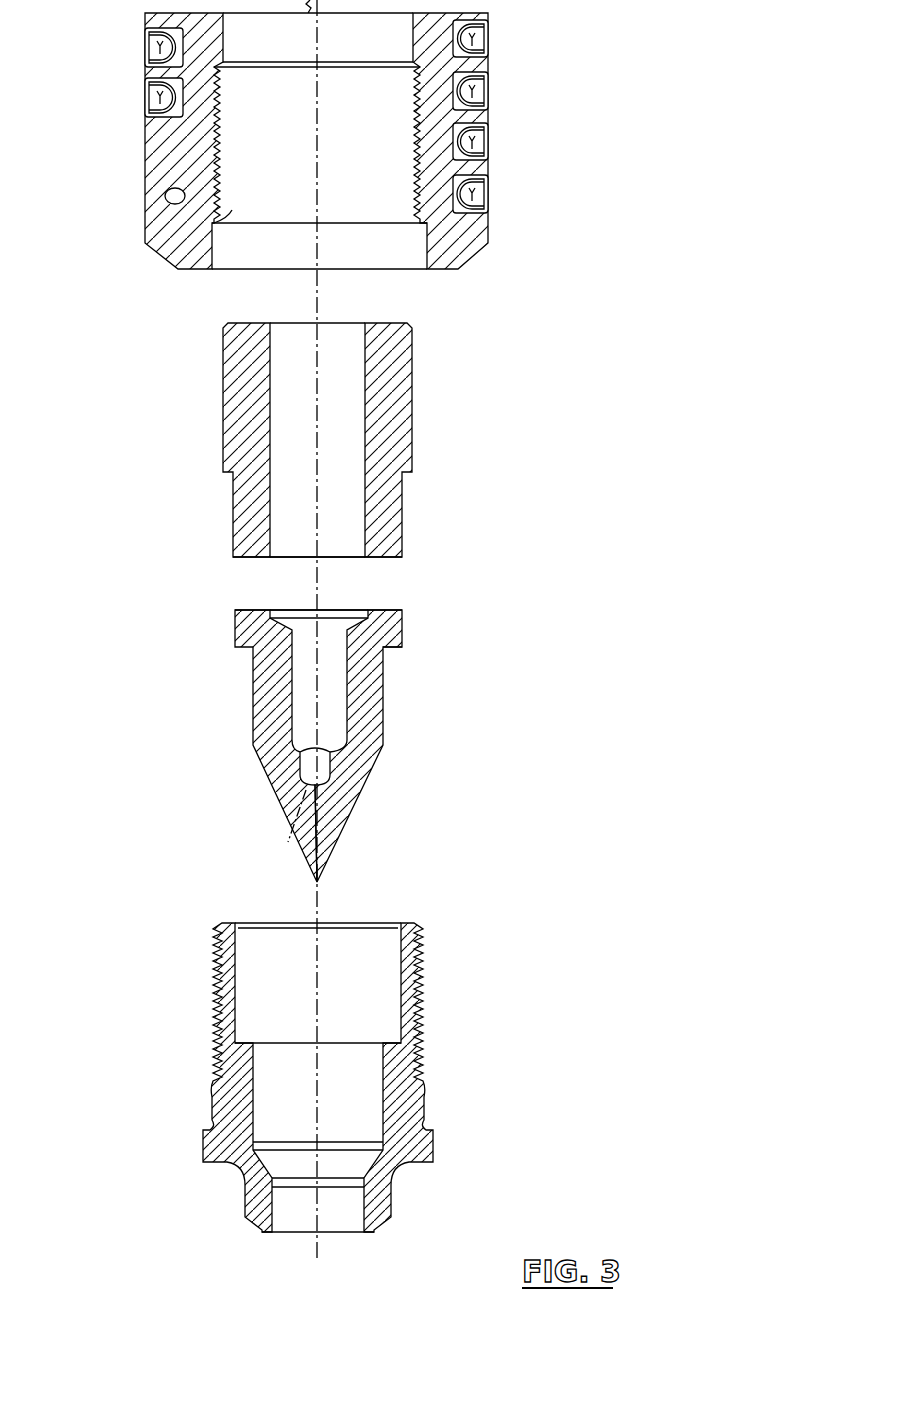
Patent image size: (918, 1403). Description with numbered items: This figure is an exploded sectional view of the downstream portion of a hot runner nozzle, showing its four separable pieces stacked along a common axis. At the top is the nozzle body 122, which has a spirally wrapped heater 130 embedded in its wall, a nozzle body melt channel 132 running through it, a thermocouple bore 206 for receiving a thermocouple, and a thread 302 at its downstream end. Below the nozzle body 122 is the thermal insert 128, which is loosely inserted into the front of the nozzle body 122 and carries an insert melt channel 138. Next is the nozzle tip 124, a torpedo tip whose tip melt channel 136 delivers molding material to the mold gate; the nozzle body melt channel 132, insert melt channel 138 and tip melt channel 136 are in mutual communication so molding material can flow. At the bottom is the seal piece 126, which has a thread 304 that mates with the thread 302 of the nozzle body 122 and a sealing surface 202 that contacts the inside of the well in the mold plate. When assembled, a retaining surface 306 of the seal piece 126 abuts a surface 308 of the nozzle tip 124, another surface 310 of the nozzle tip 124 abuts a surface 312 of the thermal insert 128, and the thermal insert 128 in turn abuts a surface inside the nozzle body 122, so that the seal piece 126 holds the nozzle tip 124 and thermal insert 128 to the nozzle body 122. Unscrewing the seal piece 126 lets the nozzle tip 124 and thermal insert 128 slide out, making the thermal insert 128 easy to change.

The nozzle body 122 is at (458, 247).
The nozzle tip 124 is at (390, 688).
The seal piece 126 is at (423, 1142).
The thermal insert 128 is at (398, 413).
The heater 130 is at (473, 193).
The nozzle body melt channel 132 is at (341, 154).
The tip melt channel 136 is at (342, 701).
The insert melt channel 138 is at (342, 417).
The sealing surface 202 is at (400, 1197).
The thermocouple bore 206 is at (163, 203).
The thread 302 is at (226, 222).
The thread 304 is at (423, 973).
The retaining surface 306 is at (395, 1038).
The surface 308 is at (393, 647).
The surface 310 is at (392, 606).
The surface 312 is at (390, 560).